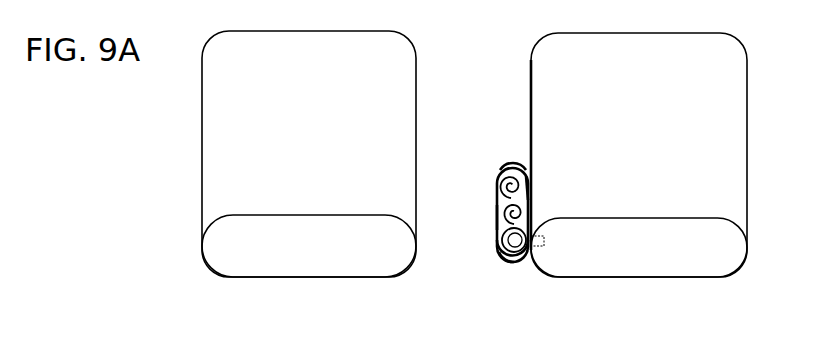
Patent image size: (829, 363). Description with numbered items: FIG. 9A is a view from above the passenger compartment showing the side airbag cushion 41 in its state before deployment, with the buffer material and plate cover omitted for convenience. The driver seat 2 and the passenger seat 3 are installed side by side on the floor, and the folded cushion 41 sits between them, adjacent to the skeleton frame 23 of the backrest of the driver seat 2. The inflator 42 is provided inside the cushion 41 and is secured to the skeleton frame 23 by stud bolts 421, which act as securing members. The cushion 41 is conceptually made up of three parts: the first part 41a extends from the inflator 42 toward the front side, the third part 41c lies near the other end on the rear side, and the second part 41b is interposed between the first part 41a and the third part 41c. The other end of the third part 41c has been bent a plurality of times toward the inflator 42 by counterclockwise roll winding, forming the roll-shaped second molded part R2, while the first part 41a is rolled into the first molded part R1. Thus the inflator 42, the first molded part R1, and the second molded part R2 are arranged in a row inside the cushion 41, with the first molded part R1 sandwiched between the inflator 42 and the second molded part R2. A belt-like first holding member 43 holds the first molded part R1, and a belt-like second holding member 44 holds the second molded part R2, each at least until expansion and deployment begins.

The driver seat 2 is at (750, 151).
The passenger seat 3 is at (194, 148).
The skeleton frame 23 is at (680, 278).
The cushion 41 is at (496, 178).
The first part 41a is at (502, 207).
The second part 41b is at (496, 233).
The third part 41c is at (523, 176).
The inflator 42 is at (516, 257).
The stud bolt 421 is at (535, 246).
The first holding member 43 is at (500, 261).
The second holding member 44 is at (494, 226).
The first molded part R1 is at (496, 221).
The second molded part R2 is at (502, 168).